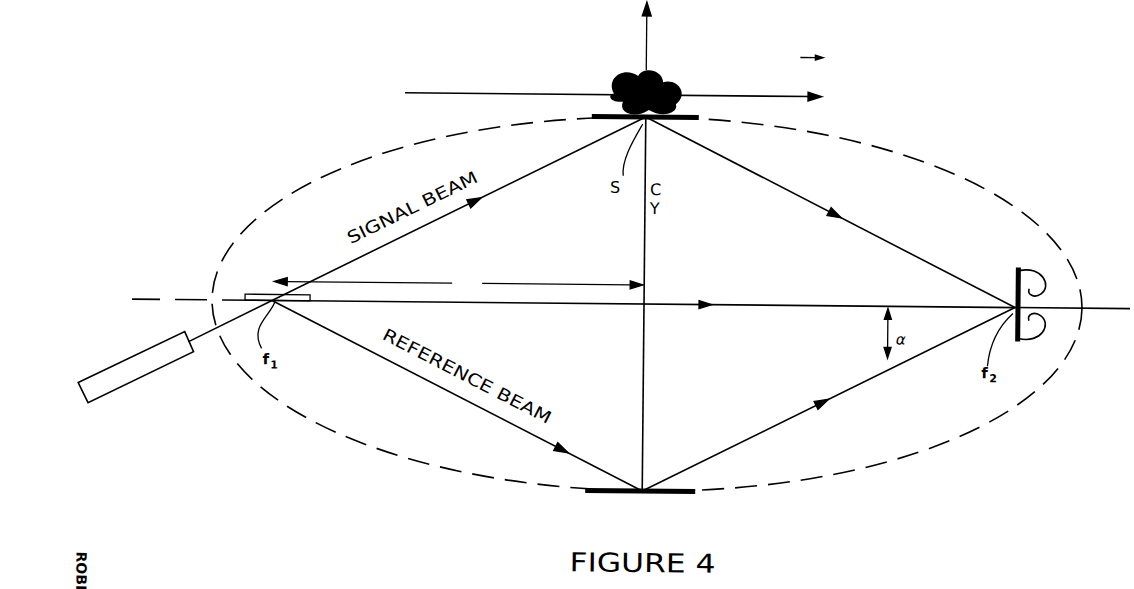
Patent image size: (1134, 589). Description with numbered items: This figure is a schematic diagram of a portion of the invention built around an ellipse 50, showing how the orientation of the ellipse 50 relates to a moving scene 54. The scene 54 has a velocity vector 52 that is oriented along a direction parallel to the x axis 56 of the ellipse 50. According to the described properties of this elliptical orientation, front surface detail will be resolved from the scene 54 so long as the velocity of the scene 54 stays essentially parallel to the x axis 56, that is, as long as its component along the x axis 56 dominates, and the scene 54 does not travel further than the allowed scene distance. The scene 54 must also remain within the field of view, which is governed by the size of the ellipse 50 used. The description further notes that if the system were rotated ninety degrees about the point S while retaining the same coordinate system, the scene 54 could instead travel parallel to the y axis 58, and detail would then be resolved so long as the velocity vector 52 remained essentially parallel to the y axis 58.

The ellipse 50 is at (262, 404).
The velocity vector 52 is at (757, 93).
The scene 54 is at (657, 86).
The x axis 56 is at (664, 307).
The y axis 58 is at (645, 283).